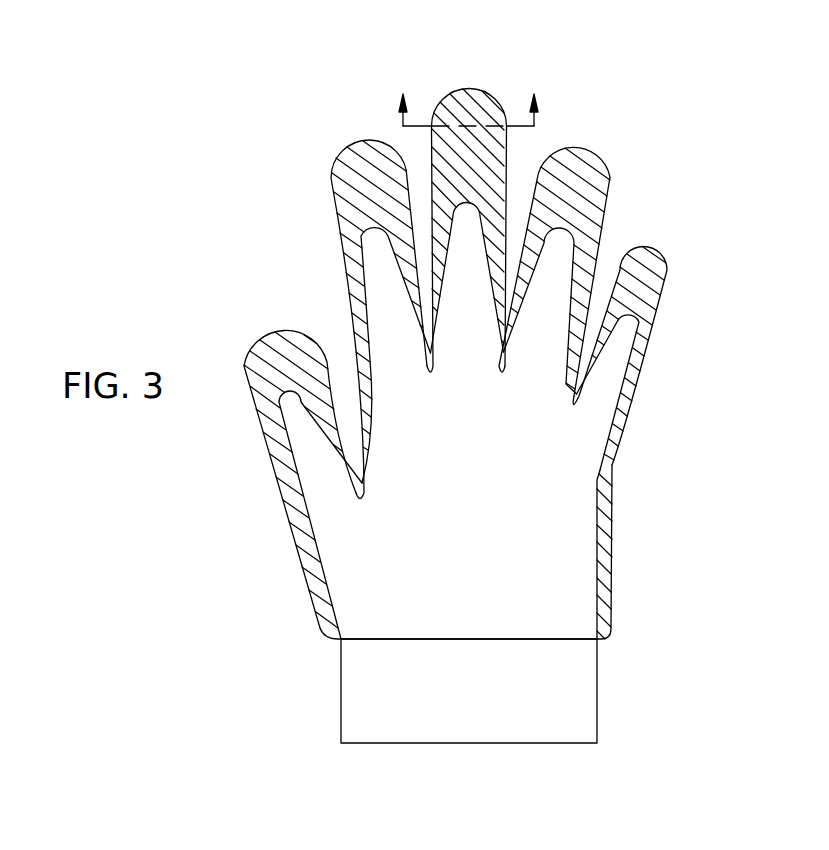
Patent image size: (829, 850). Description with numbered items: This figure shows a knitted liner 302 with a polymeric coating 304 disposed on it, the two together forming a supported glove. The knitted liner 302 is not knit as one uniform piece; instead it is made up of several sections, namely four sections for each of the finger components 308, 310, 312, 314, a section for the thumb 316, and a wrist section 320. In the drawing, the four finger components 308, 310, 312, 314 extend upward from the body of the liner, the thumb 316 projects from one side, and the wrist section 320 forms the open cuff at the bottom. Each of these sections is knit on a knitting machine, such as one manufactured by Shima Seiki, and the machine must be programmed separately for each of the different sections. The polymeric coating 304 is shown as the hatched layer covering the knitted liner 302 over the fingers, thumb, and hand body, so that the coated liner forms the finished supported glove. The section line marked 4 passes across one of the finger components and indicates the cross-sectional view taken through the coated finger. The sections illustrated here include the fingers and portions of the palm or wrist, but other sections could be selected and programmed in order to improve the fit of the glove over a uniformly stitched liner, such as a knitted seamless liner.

The knitted liner 302 is at (465, 324).
The polymeric coating 304 is at (490, 110).
The finger component 308 is at (657, 253).
The finger component 310 is at (590, 143).
The finger component 312 is at (475, 191).
The finger component 314 is at (347, 147).
The thumb 316 is at (267, 328).
The wrist section 320 is at (597, 690).
The section line 4- 4 is at (467, 91).